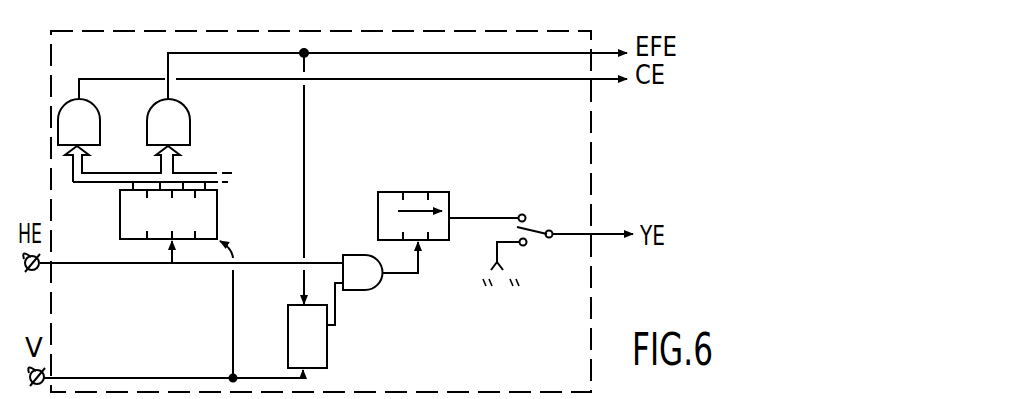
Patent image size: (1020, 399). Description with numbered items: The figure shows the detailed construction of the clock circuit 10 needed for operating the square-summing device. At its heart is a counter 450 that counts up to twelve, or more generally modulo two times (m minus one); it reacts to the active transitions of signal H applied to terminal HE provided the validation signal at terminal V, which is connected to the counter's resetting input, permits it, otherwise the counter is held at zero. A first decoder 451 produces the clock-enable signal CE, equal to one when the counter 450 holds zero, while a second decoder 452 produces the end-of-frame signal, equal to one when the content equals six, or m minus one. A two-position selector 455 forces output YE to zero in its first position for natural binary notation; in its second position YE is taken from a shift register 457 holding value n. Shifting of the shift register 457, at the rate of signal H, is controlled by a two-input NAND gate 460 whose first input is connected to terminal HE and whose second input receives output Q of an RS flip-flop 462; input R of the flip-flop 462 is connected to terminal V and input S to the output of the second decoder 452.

The clock circuit 10 is at (575, 310).
The counter 450 is at (210, 225).
The first decoder 451 is at (122, 112).
The second decoder 452 is at (190, 127).
The two-position selector 455 is at (537, 220).
The shift register 457 is at (433, 192).
The two-input NAND gate 460 is at (364, 292).
The RS flip-flop 462 is at (328, 345).